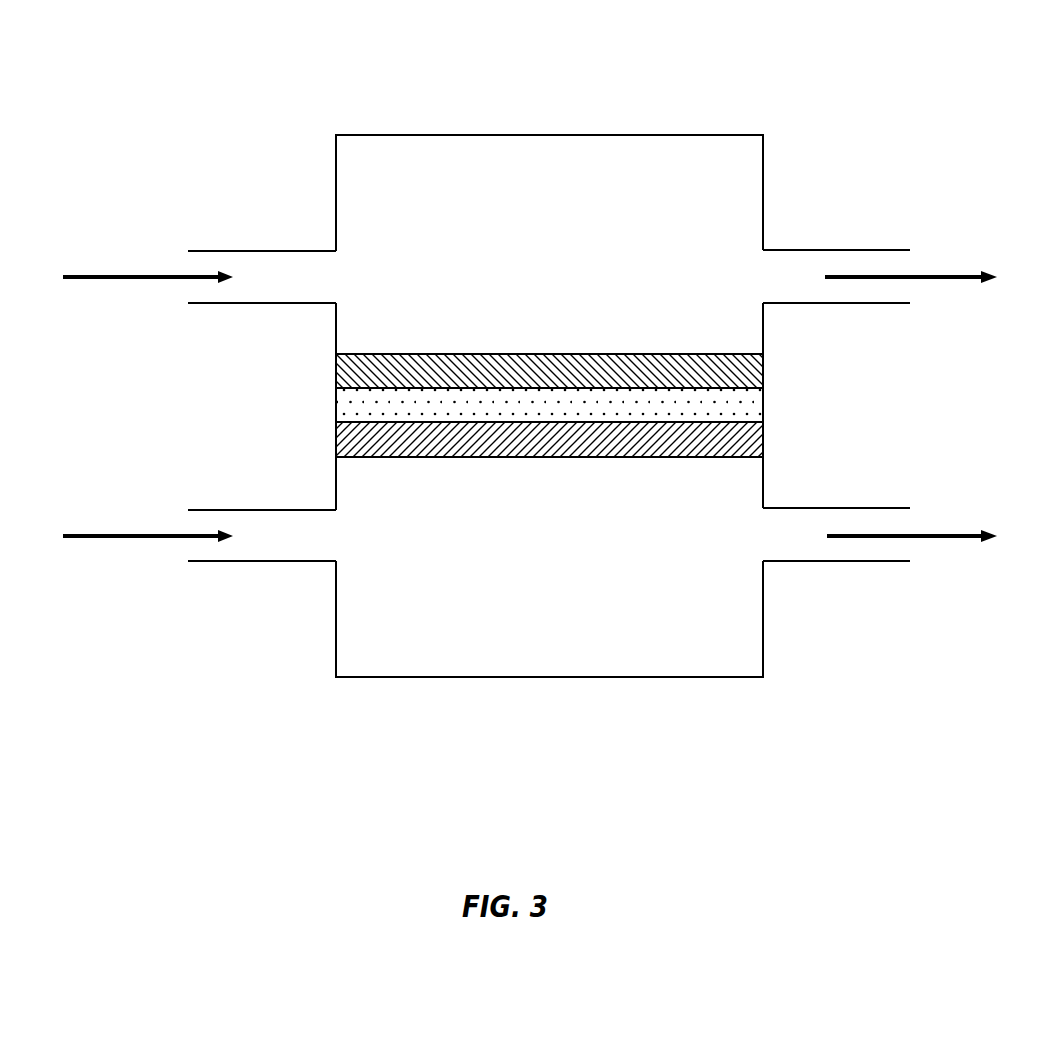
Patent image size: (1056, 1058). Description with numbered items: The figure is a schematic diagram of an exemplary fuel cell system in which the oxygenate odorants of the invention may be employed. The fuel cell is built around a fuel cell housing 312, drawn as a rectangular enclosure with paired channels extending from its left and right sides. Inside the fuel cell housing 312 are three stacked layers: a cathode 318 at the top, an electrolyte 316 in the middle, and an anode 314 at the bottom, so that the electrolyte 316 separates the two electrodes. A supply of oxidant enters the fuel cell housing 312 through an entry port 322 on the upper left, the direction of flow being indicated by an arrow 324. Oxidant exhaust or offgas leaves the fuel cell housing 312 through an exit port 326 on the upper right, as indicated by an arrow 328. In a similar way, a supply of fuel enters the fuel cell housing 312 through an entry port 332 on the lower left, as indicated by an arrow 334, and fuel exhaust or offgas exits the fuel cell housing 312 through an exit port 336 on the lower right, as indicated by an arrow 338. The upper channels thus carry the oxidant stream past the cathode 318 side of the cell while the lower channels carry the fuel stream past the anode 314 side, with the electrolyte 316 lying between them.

The fuel cell housing 312 is at (653, 135).
The anode 314 is at (620, 457).
The electrolyte 316 is at (763, 405).
The cathode 318 is at (447, 354).
The entry port 322 is at (273, 250).
The arrow 324 is at (143, 275).
The exit port 326 is at (836, 250).
The arrow 328 is at (932, 277).
The entry port 332 is at (273, 510).
The arrow 334 is at (143, 535).
The exit port 336 is at (863, 508).
The arrow 338 is at (945, 536).